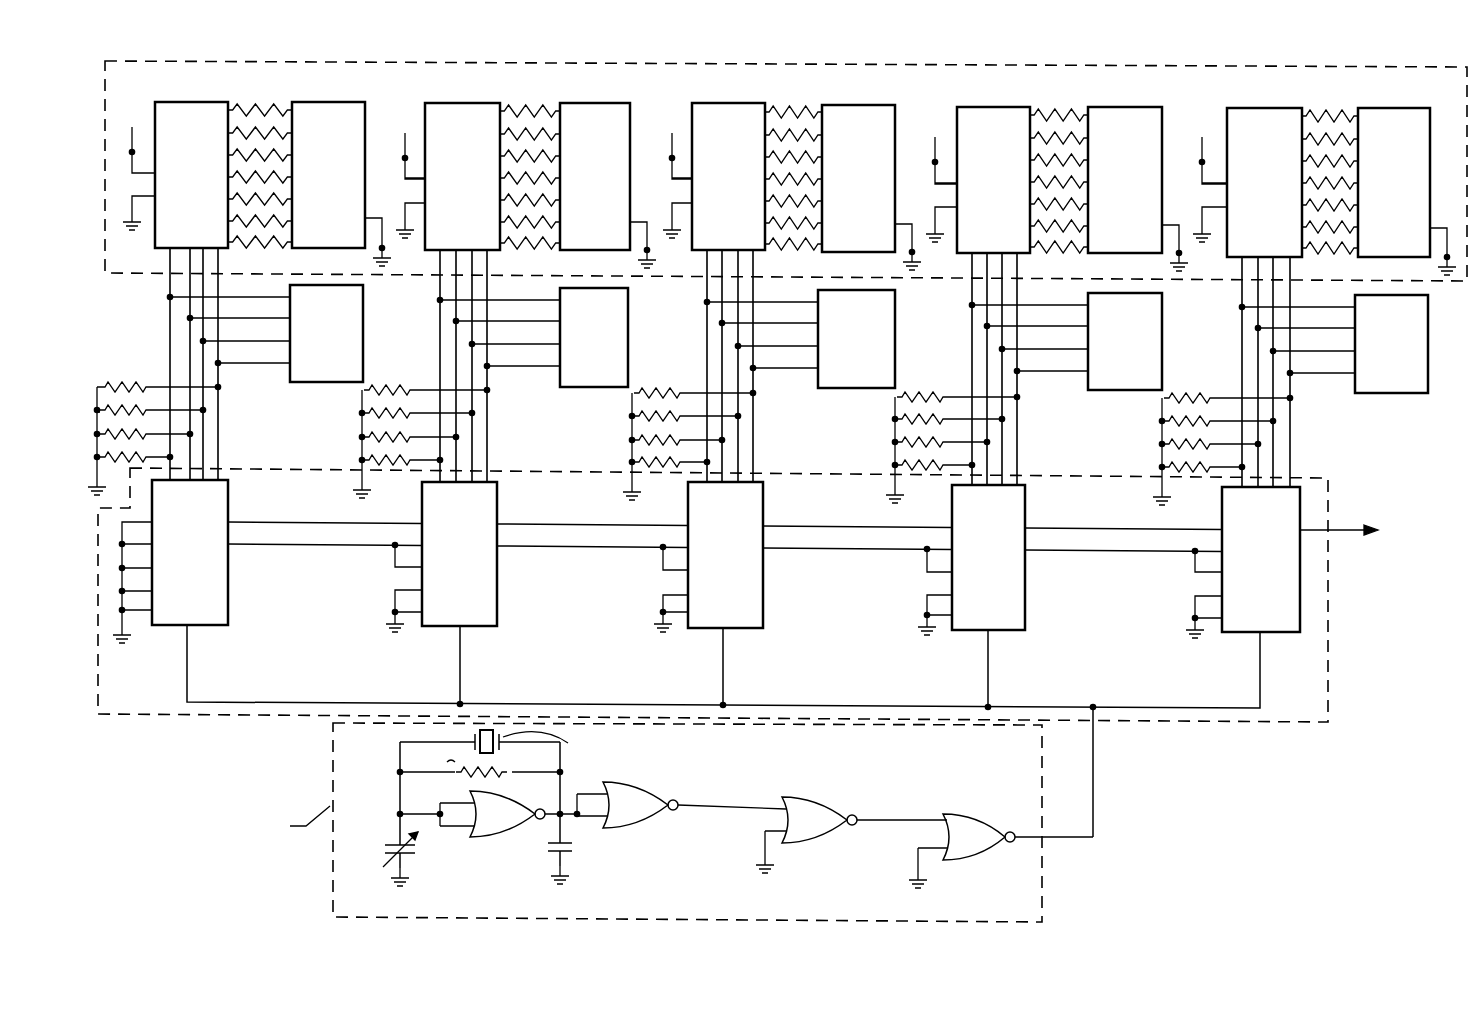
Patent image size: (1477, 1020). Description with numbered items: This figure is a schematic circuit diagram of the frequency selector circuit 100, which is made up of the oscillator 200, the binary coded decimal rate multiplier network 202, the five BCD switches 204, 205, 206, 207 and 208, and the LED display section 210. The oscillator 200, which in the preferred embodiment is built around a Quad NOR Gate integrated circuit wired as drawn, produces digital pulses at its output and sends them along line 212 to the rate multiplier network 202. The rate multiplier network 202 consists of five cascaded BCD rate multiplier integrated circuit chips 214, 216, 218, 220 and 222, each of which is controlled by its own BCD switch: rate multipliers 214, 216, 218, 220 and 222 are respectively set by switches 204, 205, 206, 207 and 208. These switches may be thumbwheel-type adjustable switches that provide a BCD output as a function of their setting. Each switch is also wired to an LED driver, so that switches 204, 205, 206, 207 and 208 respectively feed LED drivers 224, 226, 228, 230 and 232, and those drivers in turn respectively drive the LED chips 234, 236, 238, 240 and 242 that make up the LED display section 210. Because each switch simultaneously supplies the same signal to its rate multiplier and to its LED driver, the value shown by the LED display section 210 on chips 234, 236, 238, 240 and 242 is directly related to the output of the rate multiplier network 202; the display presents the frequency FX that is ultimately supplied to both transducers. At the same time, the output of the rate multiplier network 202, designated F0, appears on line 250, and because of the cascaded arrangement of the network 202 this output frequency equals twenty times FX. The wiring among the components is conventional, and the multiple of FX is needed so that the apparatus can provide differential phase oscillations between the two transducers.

The frequency selector circuit 100 is at (285, 742).
The oscillator 200 is at (1028, 910).
The BCD rate multiplier network 202 is at (896, 680).
The BCD switch 204 is at (356, 339).
The BCD switch 205 is at (621, 342).
The BCD switch 206 is at (881, 344).
The BCD switch 207 is at (1149, 347).
The BCD switch 208 is at (1416, 349).
The LED display section 210 is at (614, 62).
The line 212 is at (1094, 788).
The rate multiplier 214 is at (222, 596).
The rate multiplier 216 is at (481, 596).
The rate multiplier 218 is at (748, 598).
The rate multiplier 220 is at (1011, 601).
The rate multiplier 222 is at (1283, 604).
The LED driver 224 is at (211, 228).
The LED driver 226 is at (486, 197).
The LED driver 228 is at (754, 197).
The LED driver 230 is at (1018, 201).
The LED driver 232 is at (1288, 204).
The LED chip 234 is at (354, 190).
The LED chip 236 is at (621, 197).
The LED chip 238 is at (883, 199).
The LED chip 240 is at (1150, 201).
The LED chip 242 is at (1420, 204).
The line 250 is at (1344, 530).